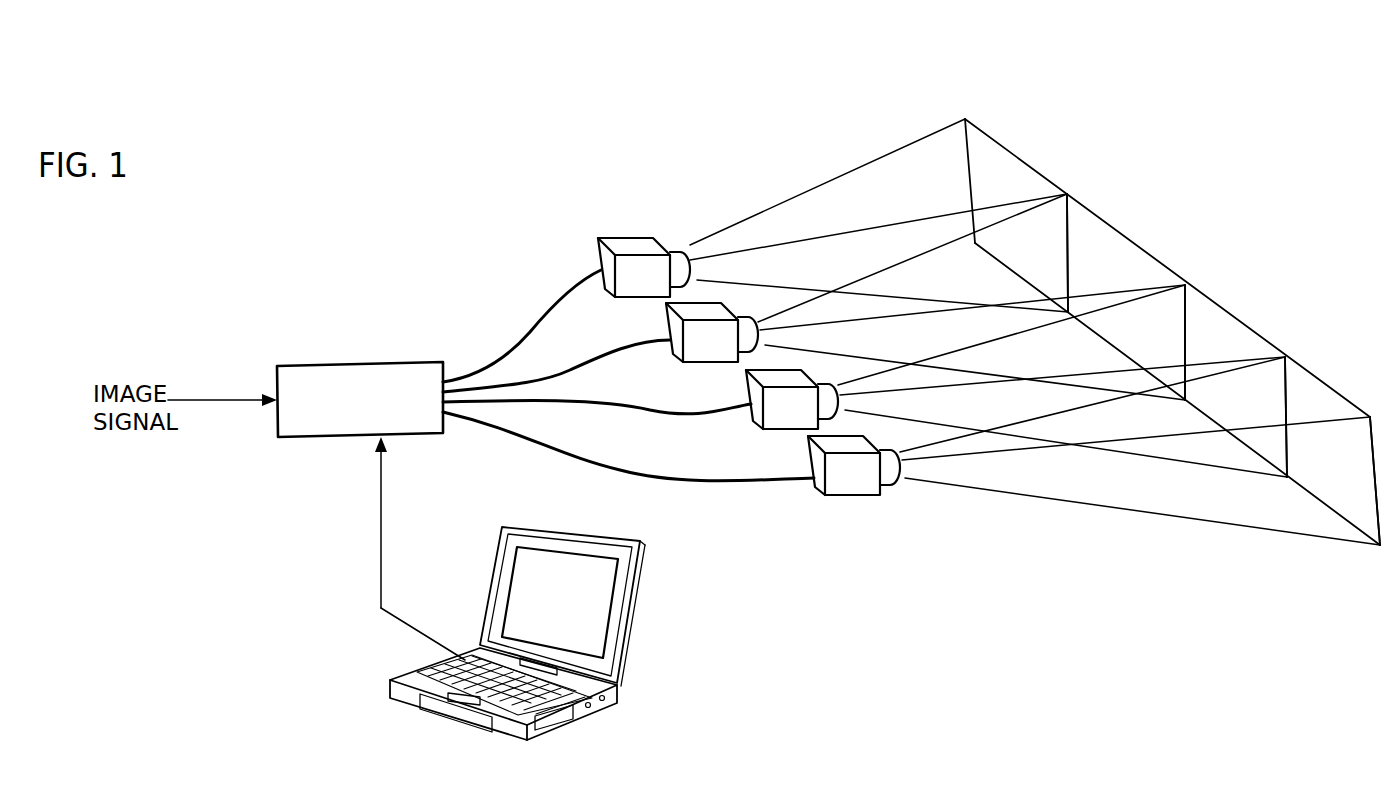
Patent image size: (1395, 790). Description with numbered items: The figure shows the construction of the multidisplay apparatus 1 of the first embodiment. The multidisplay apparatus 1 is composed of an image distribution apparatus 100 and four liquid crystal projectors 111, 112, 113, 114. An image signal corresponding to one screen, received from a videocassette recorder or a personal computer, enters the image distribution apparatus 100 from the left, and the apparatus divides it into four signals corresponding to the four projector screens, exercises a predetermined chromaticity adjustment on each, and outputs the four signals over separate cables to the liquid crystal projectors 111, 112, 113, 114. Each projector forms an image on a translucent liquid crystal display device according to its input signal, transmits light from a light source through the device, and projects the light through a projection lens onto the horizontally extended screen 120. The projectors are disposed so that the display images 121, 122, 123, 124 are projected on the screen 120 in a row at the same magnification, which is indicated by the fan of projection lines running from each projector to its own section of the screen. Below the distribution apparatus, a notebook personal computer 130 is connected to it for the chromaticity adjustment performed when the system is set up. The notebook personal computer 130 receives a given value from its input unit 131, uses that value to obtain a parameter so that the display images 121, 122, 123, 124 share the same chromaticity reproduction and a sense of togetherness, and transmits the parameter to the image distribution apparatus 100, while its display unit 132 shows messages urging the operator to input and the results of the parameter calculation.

The multidisplay apparatus 1 is at (390, 54).
The image distribution apparatus 100 is at (333, 350).
The liquid crystal projector 111 is at (641, 284).
The liquid crystal projector 112 is at (708, 350).
The liquid crystal projector 113 is at (792, 420).
The liquid crystal projector 114 is at (845, 478).
The screen 120 is at (1177, 328).
The display image 121 is at (1000, 180).
The display image 122 is at (1095, 253).
The display image 123 is at (1215, 330).
The display image 124 is at (1305, 395).
The notebook personal computer 130 is at (546, 608).
The input unit 131 is at (612, 705).
The display unit 132 is at (553, 595).